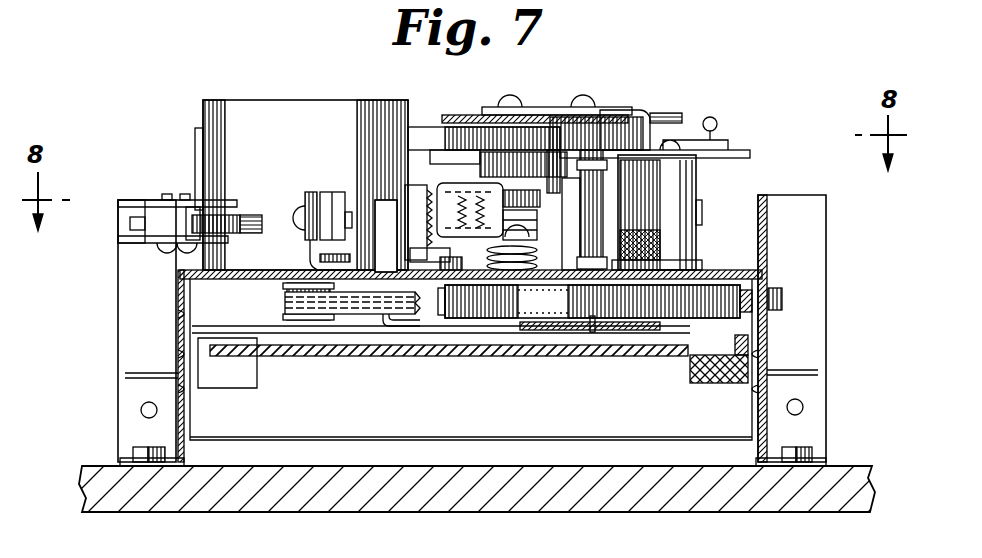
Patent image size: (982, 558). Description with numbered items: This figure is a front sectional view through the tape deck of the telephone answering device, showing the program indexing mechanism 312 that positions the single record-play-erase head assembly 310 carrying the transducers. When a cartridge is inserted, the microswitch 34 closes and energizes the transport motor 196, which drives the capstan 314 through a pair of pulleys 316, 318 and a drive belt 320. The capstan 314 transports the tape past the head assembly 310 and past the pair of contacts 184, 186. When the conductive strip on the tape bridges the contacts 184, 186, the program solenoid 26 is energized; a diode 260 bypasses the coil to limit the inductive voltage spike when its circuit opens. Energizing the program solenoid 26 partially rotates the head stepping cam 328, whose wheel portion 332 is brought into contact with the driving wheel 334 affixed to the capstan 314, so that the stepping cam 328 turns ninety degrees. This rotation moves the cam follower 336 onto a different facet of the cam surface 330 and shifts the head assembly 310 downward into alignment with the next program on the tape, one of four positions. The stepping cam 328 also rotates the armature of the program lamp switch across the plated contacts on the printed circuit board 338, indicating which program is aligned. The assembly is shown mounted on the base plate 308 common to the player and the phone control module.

The transport motor 196 is at (238, 100).
The microswitch 34 is at (219, 192).
The contact 184 is at (332, 195).
The contact 186 is at (314, 208).
The head assembly 310 is at (440, 186).
The cam follower 336 is at (395, 190).
The wheel portion 332 is at (421, 130).
The head stepping cam 328 is at (449, 165).
The printed circuit board 338 is at (471, 118).
The program indexing mechanism 312 is at (556, 69).
The driving wheel 334 is at (623, 121).
The diode 260 is at (712, 117).
The program solenoid 26 is at (649, 184).
The capstan 314 is at (598, 241).
The cam surface 330 is at (550, 196).
The pulley 316 is at (312, 322).
The drive belt 320 is at (365, 310).
The pulley 318 is at (686, 309).
The base plate 308 is at (483, 498).